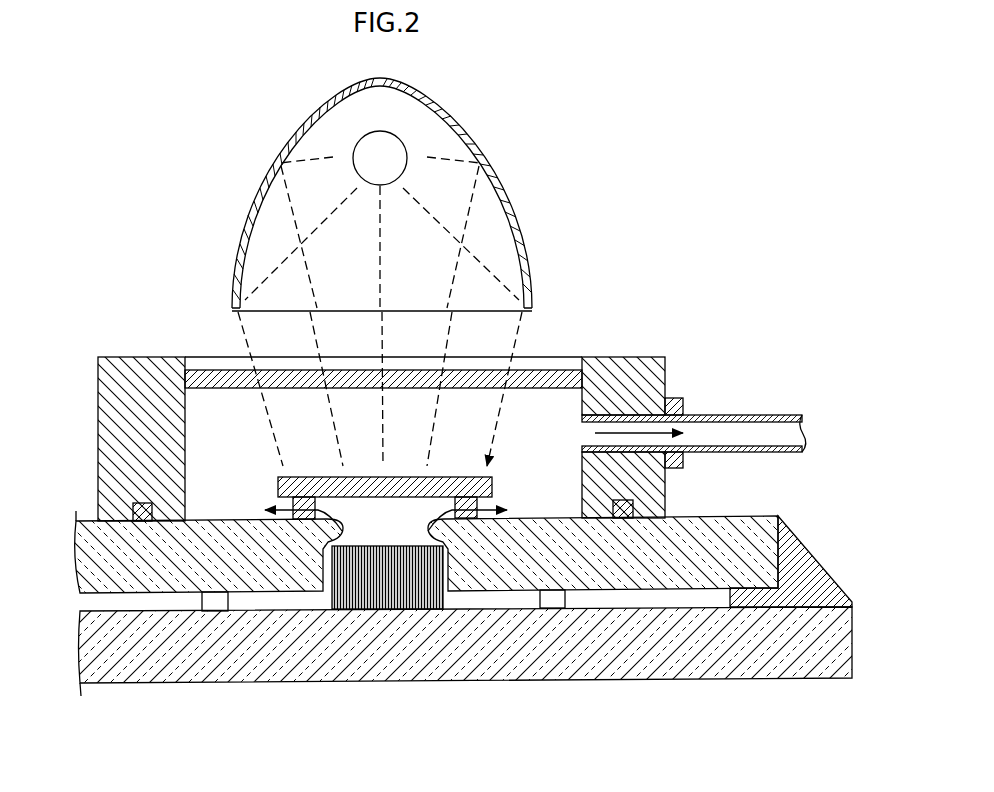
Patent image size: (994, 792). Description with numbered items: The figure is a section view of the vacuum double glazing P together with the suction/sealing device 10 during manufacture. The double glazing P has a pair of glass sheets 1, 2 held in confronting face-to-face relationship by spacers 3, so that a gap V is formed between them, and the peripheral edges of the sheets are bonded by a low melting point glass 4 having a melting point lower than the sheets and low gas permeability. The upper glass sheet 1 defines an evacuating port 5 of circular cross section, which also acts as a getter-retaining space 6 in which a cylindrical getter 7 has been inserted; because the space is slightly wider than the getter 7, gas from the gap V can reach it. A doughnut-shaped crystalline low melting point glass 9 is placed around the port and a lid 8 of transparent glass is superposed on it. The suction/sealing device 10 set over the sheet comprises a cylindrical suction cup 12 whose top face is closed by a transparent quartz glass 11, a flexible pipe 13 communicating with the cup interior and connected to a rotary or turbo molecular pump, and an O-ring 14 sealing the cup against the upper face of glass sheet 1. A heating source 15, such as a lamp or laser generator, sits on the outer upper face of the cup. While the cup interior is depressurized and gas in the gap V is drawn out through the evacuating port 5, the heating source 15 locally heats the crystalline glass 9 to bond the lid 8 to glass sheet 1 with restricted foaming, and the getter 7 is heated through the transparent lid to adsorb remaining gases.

The glass sheet 1 is at (715, 516).
The glass sheet 2 is at (487, 650).
The spacers 3 is at (222, 612).
The low melting point glass 4 is at (820, 567).
The evacuating port 5 is at (380, 526).
The getter-retaining space 6 is at (380, 389).
The getter 7 is at (392, 609).
The lid 8 is at (402, 476).
The crystalline low melting point glass 9 is at (462, 497).
The suction/sealing device 10 is at (630, 345).
The transparent quartz glass 11 is at (224, 372).
The suction cup 12 is at (140, 357).
The flexible pipe 13 is at (736, 414).
The O-ring 14 is at (142, 522).
The heating source 15 is at (505, 189).
The double glazing P is at (172, 688).
The gap V is at (298, 596).